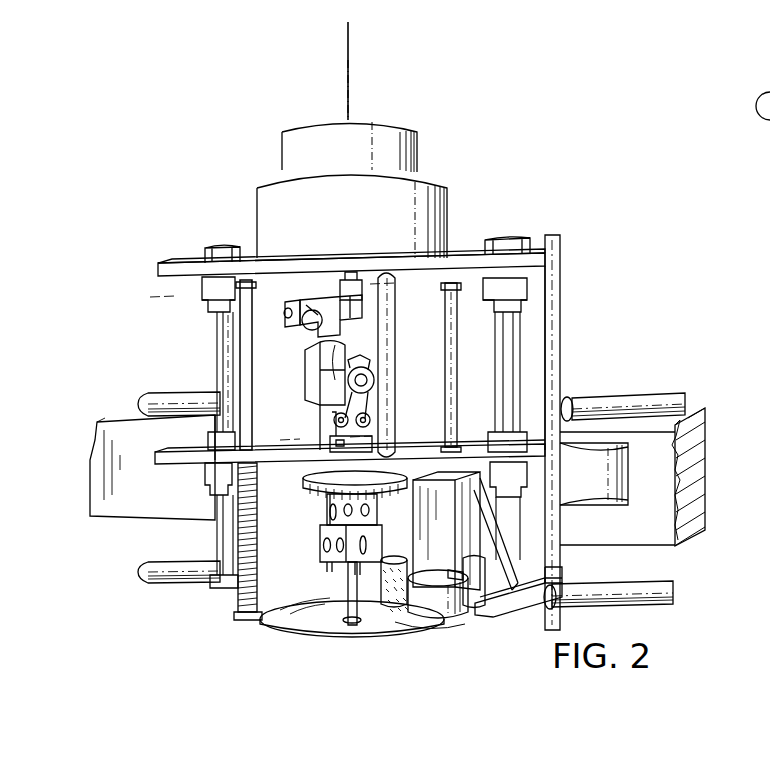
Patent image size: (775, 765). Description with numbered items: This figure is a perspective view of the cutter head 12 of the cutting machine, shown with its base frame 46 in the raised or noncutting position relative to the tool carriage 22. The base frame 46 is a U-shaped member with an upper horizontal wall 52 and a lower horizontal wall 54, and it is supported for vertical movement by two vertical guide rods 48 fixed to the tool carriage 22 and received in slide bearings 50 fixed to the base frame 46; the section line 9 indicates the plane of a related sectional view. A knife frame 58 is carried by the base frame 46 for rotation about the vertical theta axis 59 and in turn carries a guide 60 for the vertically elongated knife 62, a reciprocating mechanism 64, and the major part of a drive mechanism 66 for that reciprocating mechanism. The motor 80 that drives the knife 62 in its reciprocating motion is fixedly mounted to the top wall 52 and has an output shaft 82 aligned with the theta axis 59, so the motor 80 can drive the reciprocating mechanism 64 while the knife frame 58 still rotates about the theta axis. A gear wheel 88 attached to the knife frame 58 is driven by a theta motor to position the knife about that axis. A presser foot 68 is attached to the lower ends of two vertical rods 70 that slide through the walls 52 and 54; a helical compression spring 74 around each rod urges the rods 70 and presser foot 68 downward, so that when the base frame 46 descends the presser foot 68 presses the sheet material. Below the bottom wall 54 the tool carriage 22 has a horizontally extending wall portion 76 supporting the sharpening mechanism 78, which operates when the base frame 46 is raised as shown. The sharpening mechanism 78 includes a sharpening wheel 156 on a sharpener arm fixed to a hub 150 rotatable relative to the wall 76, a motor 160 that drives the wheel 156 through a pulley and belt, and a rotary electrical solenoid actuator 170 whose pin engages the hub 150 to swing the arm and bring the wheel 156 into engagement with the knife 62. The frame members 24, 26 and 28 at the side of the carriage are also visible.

The section line indicator 9 is at (774, 48).
The cutter head 12 is at (522, 163).
The tool carriage 22 is at (550, 246).
The frame block 24 is at (690, 412).
The guide rods 26 is at (620, 408).
The slide bearing block 28 is at (606, 497).
The base frame 46 is at (548, 325).
The vertical guide rods 48 is at (222, 358).
The slide bearings 50 is at (213, 292).
The upper horizontal wall 52 is at (168, 263).
The lower horizontal wall 54 is at (165, 453).
The knife frame 58 is at (305, 372).
The theta axis 59 is at (350, 88).
The knife guide 60 is at (322, 530).
The knife 62 is at (346, 592).
The reciprocating mechanism 64 is at (378, 380).
The drive mechanism 66 is at (380, 320).
The presser foot 68 is at (356, 638).
The vertical rods 70 is at (247, 340).
The helical compression spring 74 is at (252, 500).
The horizontally extending wall portion 76 is at (494, 612).
The sharpening mechanism 78 is at (470, 620).
The motor 80 is at (415, 196).
The output shaft 82 is at (355, 275).
The gear wheel 88 is at (374, 499).
The hub 150 is at (500, 566).
The sharpening wheel 156 is at (394, 560).
The motor 160 is at (470, 516).
The rotary electrical solenoid actuator 170 is at (436, 602).